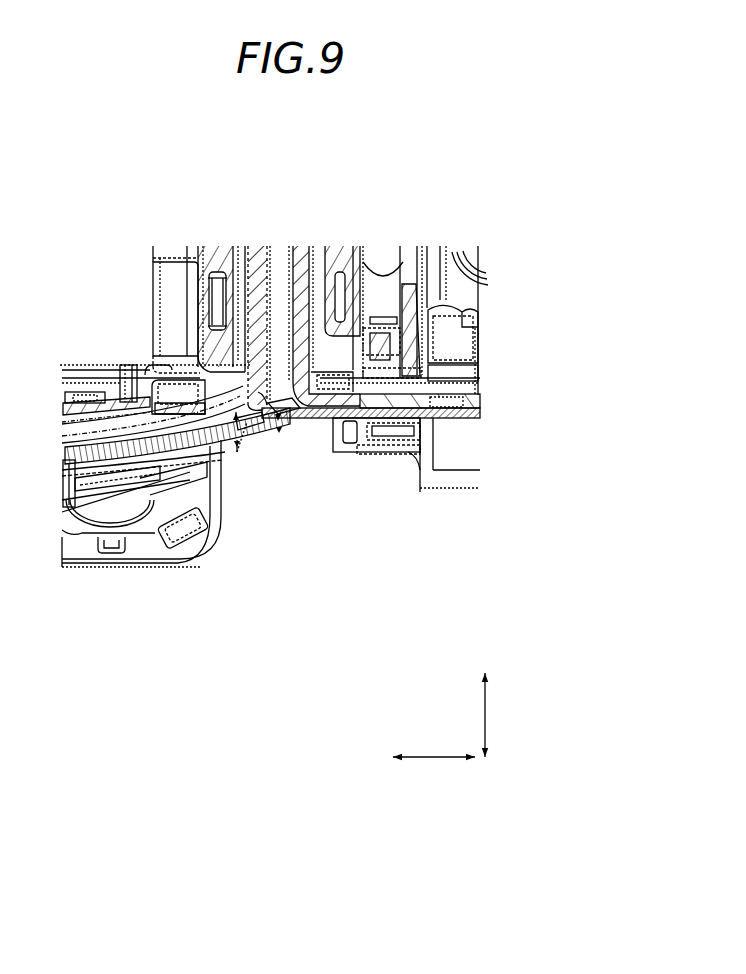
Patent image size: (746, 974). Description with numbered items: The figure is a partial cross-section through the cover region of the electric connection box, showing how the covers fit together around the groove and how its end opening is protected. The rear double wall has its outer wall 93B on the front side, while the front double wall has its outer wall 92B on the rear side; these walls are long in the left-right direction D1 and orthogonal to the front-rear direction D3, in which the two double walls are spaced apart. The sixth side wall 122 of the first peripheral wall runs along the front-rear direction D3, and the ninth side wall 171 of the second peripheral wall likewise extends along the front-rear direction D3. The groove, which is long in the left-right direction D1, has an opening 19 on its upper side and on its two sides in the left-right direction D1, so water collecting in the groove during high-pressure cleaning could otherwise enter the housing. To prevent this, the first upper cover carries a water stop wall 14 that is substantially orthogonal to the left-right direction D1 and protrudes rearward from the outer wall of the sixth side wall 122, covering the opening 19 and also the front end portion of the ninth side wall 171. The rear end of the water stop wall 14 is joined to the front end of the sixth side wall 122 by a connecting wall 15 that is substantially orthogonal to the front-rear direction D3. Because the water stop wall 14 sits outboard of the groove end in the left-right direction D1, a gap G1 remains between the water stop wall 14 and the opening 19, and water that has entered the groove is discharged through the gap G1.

The outer wall 93B is at (247, 358).
The outer wall 92B is at (300, 353).
The water stop wall 14 is at (243, 450).
The connecting wall 15 is at (296, 422).
The opening 19 is at (277, 424).
The sixth side wall 122 is at (333, 420).
The gap G1 is at (237, 450).
The ninth side wall 171 is at (132, 470).
The left-right direction D1 is at (487, 706).
The front-rear direction D3 is at (430, 758).